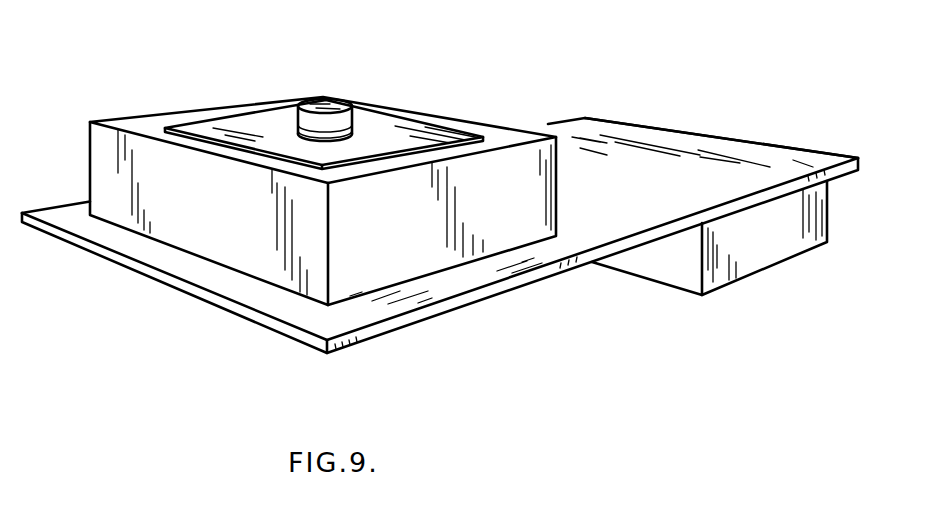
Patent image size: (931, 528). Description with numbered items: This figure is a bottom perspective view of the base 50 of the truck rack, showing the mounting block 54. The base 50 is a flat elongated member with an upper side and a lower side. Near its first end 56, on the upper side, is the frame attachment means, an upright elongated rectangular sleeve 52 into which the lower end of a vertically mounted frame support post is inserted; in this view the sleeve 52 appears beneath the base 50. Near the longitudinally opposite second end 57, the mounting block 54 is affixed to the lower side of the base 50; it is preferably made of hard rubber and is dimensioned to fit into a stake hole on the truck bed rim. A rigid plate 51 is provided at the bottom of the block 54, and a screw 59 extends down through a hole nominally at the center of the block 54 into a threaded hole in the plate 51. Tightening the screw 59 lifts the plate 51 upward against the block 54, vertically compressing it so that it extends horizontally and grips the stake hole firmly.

The base 50 is at (131, 99).
The rigid plate 51 is at (260, 122).
The upright elongated rectangular sleeve 52 is at (667, 277).
The mounting block 54 is at (97, 165).
The first end 56 is at (727, 113).
The second end 57 is at (200, 279).
The screw 59 is at (345, 100).